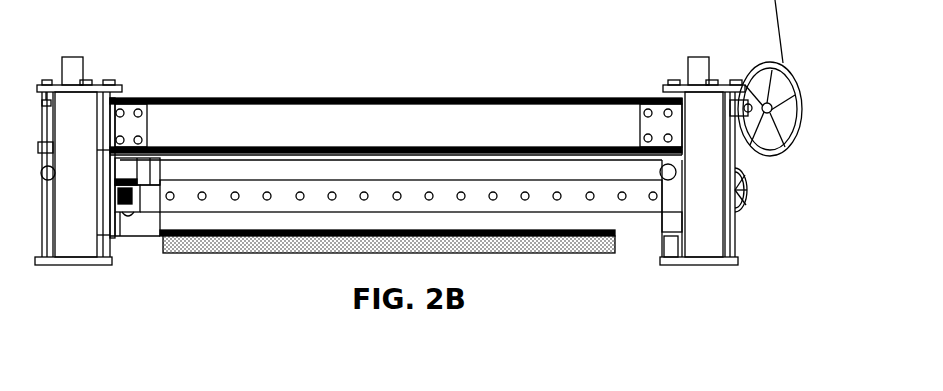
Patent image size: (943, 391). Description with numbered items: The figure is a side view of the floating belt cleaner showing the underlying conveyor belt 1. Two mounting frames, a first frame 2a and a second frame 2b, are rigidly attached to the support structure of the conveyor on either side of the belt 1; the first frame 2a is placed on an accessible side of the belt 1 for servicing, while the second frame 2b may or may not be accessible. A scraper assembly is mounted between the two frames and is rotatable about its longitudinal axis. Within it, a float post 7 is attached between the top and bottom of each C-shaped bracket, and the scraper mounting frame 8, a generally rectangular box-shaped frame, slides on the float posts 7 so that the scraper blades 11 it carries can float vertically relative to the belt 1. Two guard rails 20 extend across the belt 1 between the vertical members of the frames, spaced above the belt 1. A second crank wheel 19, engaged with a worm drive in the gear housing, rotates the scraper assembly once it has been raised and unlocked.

The second frame 2b is at (70, 122).
The float post 7 is at (128, 168).
The guard rails 20 is at (347, 137).
The scraper blades 11 is at (523, 222).
The first frame 2a is at (708, 107).
The second crank wheel 19 is at (745, 188).
The scraper mounting frame 8 is at (140, 198).
The belt 1 is at (523, 243).